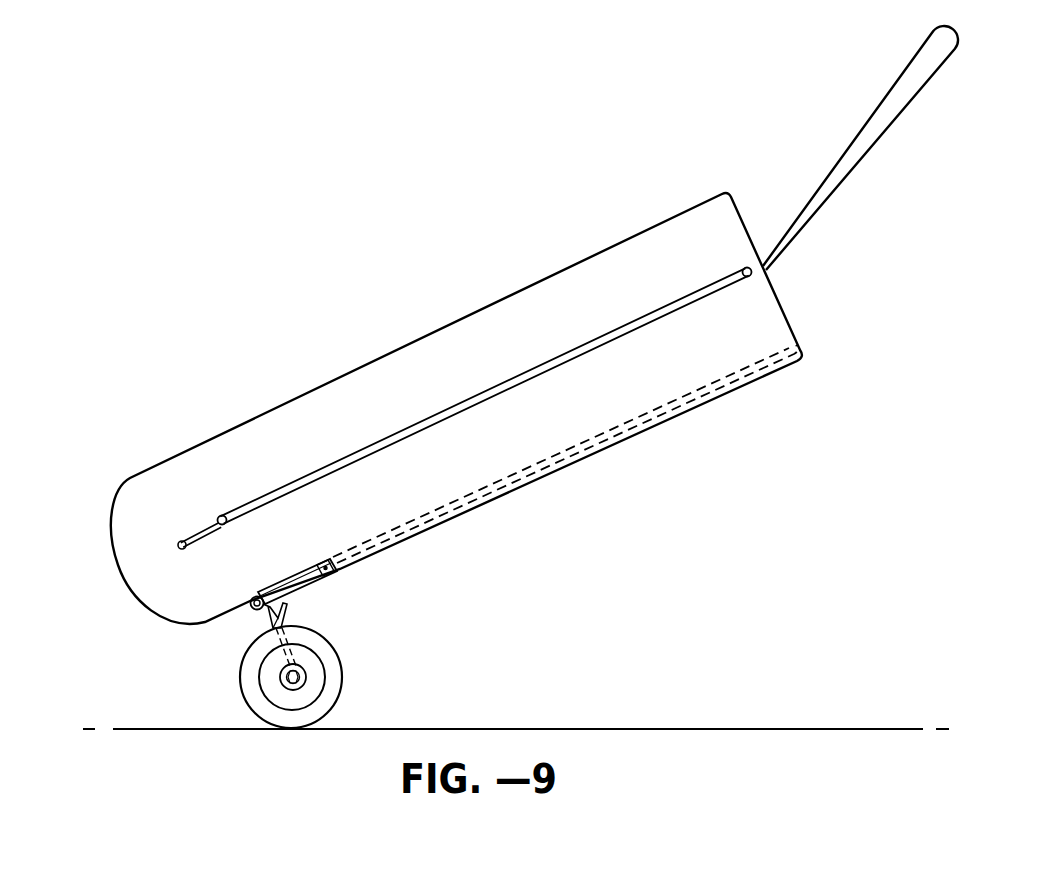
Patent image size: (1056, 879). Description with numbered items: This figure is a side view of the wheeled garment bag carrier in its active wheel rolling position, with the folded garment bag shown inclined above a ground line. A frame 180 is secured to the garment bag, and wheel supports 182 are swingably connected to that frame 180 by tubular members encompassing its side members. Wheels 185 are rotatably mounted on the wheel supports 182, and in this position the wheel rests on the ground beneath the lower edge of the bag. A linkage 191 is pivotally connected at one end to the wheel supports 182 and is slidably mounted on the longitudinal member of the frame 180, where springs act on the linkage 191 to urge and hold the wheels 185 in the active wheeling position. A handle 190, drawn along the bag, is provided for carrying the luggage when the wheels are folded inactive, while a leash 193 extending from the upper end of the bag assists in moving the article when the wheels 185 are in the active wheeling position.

The frame 180 is at (336, 567).
The wheel supports 182 is at (290, 603).
The wheels 185 is at (343, 683).
The handle 190 is at (183, 538).
The linkage 191 is at (257, 609).
The leash 193 is at (940, 48).